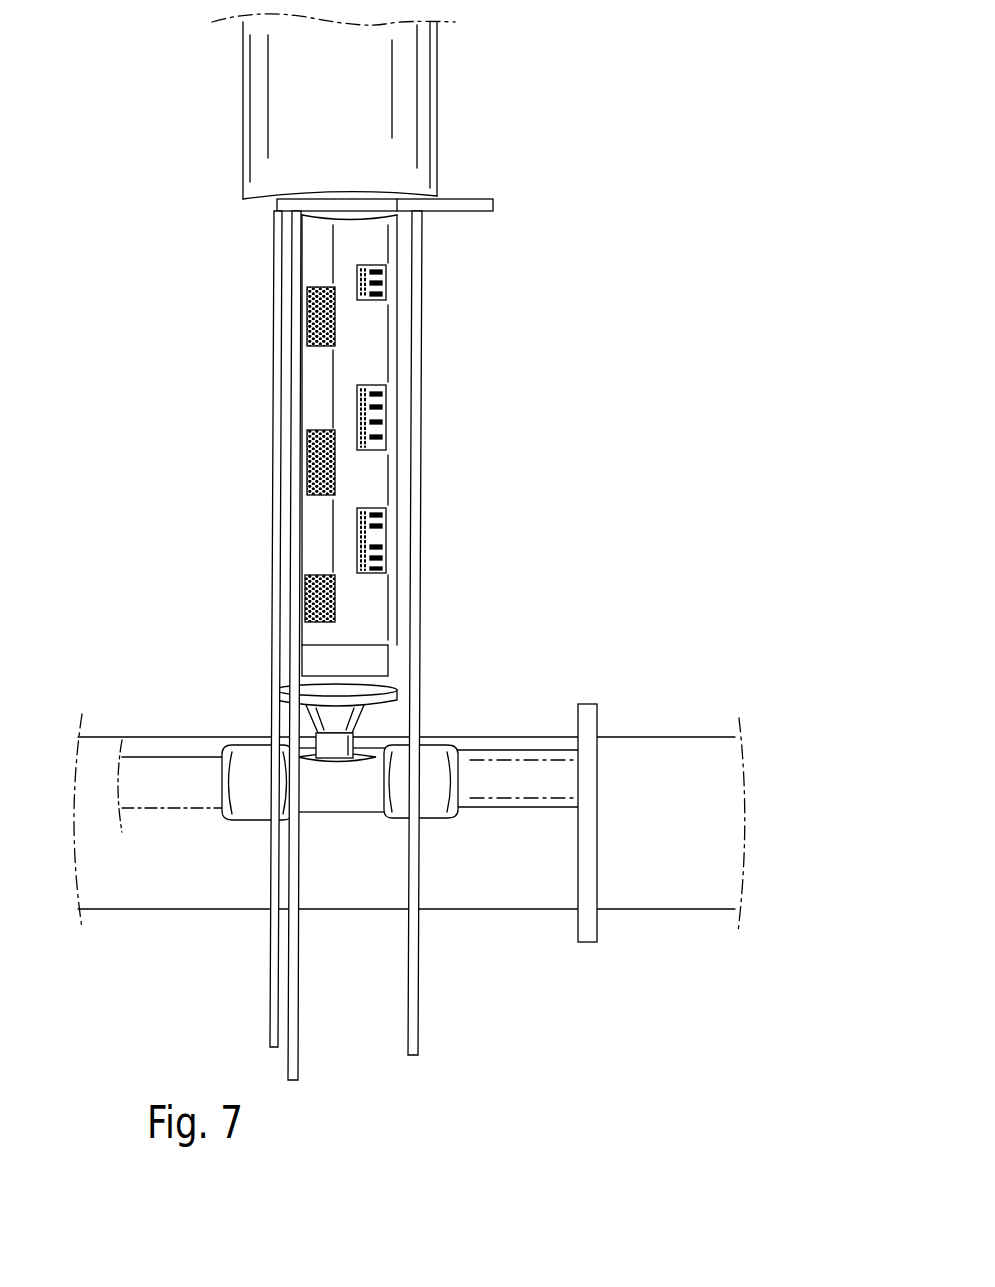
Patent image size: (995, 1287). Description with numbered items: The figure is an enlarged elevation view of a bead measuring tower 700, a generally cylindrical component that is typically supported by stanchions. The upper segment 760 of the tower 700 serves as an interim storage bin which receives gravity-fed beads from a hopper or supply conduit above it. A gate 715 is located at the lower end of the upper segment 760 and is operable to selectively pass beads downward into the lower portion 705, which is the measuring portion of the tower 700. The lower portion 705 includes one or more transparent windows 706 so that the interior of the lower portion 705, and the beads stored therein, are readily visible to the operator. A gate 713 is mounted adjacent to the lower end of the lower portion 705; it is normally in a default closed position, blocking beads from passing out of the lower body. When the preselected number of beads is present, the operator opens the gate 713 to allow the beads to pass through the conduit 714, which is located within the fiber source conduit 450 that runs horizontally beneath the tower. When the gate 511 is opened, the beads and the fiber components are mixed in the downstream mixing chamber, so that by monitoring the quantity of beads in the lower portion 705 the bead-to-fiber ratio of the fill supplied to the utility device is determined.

The tower 700 is at (584, 212).
The lower portion 705 is at (494, 346).
The transparent windows 706 is at (307, 430).
The gate 713 is at (312, 662).
The conduit 714 is at (614, 910).
The gate 715 is at (473, 199).
The upper segment 760 is at (270, 110).
The gate 511 is at (590, 703).
The inner pipe 450 is at (196, 805).